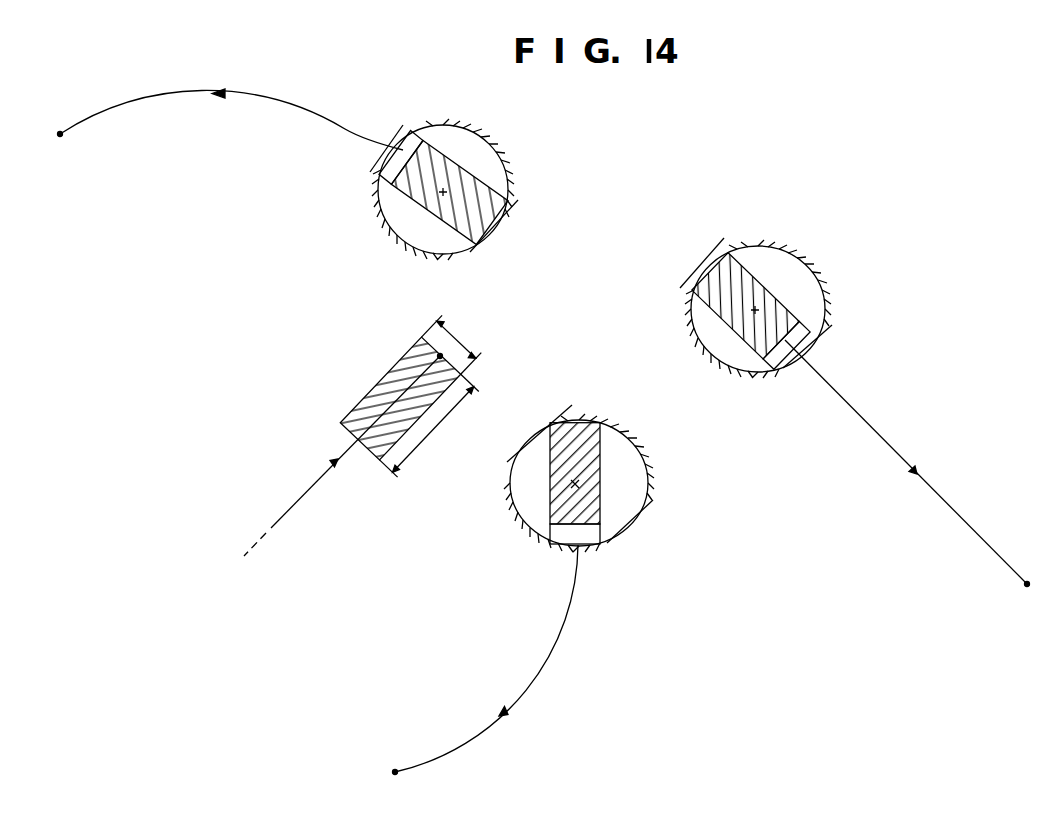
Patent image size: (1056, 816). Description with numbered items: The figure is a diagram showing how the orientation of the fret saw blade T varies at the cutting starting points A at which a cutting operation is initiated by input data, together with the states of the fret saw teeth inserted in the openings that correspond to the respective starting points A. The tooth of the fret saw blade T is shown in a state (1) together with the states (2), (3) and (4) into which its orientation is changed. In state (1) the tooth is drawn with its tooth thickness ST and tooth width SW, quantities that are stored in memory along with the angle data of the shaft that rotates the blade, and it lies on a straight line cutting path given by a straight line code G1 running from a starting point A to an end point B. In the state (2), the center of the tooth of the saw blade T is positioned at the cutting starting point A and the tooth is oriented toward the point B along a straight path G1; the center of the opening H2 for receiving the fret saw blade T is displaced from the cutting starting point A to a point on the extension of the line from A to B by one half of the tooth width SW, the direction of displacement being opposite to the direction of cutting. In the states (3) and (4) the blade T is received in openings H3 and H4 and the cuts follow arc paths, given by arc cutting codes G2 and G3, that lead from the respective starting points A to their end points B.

The state 1 is at (372, 396).
The state 2 is at (807, 303).
The state 3 is at (598, 511).
The state 4 is at (425, 156).
The fret saw blade T is at (378, 381).
The cutting starting point A is at (398, 148).
The opening H2 is at (779, 265).
The opening H3 is at (622, 500).
The opening H4 is at (404, 221).
The straight line cutting code G1 is at (310, 488).
The arc cutting code G2 is at (547, 660).
The arc cutting code G3 is at (276, 102).
The end point B is at (1027, 587).
The tooth thickness ST is at (454, 344).
The tooth width SW is at (429, 425).